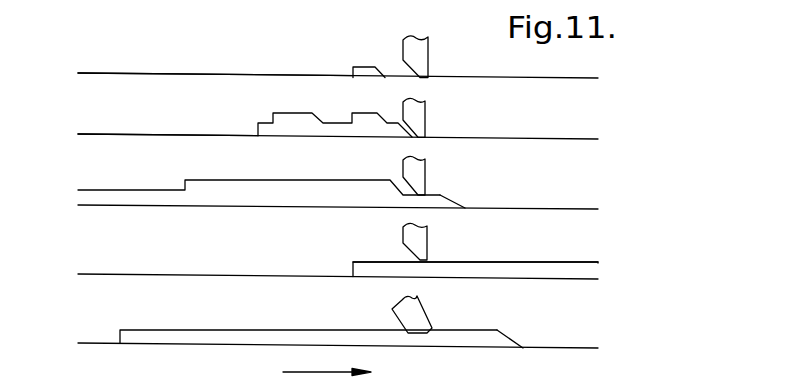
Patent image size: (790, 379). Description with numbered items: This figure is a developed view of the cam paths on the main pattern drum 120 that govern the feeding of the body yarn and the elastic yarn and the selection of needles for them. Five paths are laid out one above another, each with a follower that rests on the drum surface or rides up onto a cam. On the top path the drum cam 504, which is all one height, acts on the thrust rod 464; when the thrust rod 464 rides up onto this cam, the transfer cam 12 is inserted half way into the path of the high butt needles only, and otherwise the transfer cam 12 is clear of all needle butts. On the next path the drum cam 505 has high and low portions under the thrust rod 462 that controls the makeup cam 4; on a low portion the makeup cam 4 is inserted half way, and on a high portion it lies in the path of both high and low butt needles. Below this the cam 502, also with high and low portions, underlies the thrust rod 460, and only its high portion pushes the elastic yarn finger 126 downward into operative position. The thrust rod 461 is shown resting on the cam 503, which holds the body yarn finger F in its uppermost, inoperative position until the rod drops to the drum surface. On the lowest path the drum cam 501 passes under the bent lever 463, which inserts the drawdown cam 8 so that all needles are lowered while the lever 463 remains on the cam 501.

The transfer cam 12 is at (215, 56).
The makeup cam 4 is at (170, 113).
The elastic yarn finger 126 is at (259, 174).
The body yarn finger F is at (347, 260).
The drawdown cam 8 is at (297, 322).
The main pattern drum 120 is at (577, 78).
The drum cam 504 is at (363, 66).
The drum cam 505 is at (300, 125).
The cam 502 is at (443, 203).
The cam 503 is at (512, 268).
The drum cam 501 is at (493, 342).
The thrust rod 464 is at (412, 50).
The thrust rod 462 is at (415, 117).
The thrust rod 460 is at (418, 172).
The thrust rod 461 is at (415, 240).
The bent lever 463 is at (412, 310).